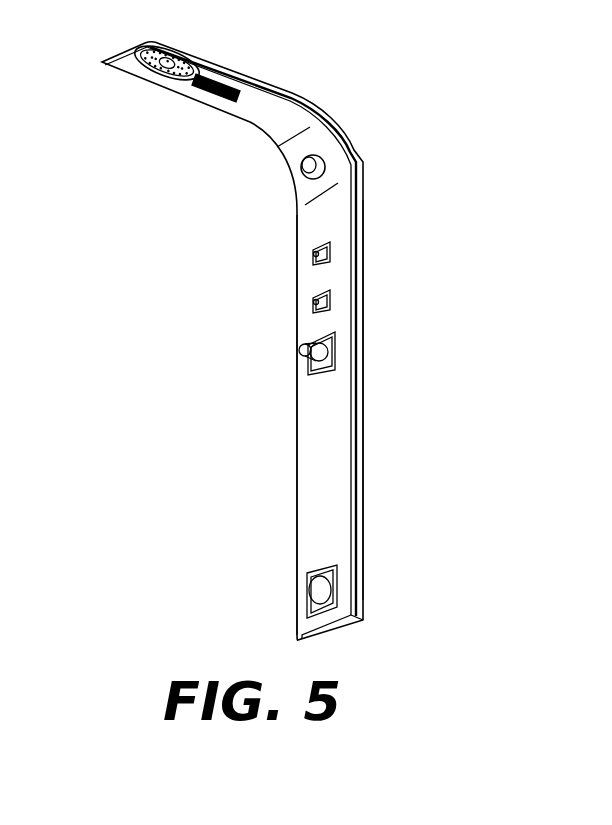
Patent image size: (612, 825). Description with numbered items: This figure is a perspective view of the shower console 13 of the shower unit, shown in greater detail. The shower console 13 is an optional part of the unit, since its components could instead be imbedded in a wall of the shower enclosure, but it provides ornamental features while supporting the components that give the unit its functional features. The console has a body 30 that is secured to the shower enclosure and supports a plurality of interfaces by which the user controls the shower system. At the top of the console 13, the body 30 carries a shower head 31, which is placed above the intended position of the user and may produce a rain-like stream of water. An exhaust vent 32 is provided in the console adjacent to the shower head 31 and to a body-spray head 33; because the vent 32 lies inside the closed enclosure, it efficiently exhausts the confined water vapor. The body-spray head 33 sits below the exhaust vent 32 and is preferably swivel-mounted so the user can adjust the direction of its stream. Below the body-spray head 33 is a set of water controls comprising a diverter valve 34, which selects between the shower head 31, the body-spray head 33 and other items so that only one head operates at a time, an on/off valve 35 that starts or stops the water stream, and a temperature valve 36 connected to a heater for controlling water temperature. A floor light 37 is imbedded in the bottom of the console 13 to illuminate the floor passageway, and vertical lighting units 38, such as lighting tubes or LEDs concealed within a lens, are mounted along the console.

The shower console 13 is at (283, 77).
The body 30 is at (297, 480).
The shower head 31 is at (163, 78).
The exhaust vent 32 is at (207, 100).
The body-spray head 33 is at (301, 170).
The diverter valve 34 is at (314, 252).
The on/off valve 35 is at (314, 301).
The temperature valve 36 is at (300, 350).
The floor light 37 is at (307, 585).
The vertical lighting units 38 is at (363, 360).